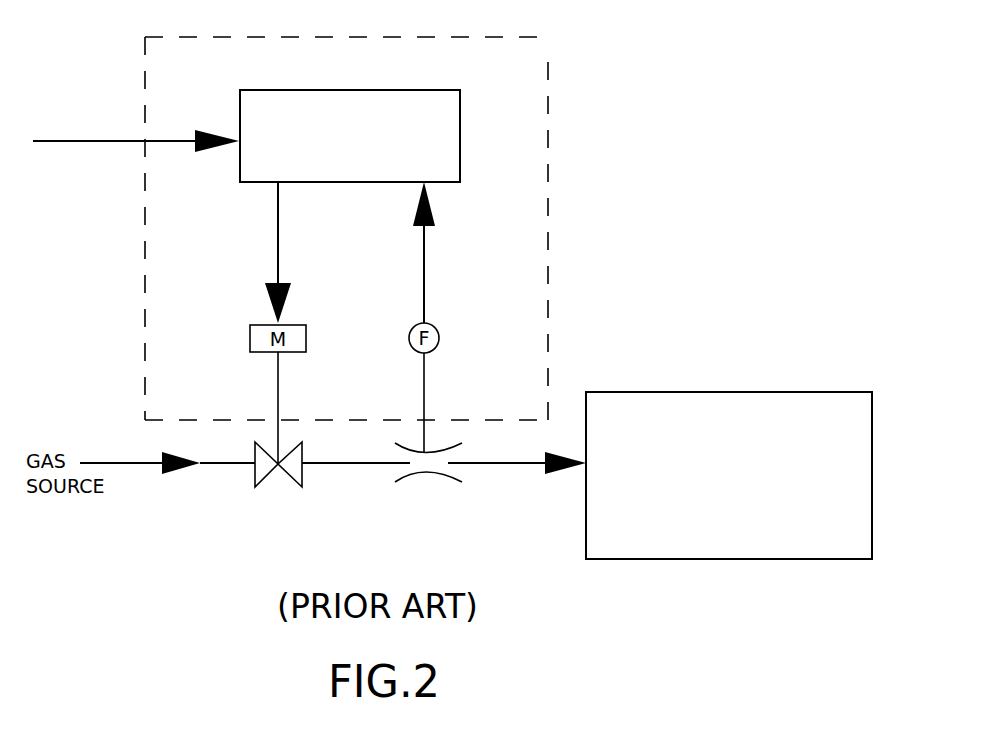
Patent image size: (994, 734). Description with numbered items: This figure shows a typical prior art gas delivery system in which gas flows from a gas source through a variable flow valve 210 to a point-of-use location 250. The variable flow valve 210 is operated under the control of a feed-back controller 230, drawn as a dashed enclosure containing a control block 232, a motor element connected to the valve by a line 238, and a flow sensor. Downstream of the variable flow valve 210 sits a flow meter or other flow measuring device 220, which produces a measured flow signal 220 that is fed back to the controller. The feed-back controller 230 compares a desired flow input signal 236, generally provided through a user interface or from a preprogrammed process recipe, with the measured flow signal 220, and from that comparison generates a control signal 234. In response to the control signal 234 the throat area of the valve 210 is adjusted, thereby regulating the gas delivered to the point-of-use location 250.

The variable flow valve 210 is at (268, 480).
The flow measuring device 220 is at (412, 474).
The feed-back controller 230 is at (548, 62).
The controller 232 is at (381, 148).
The control signal 234 is at (424, 248).
The desired flow input signal 236 is at (92, 141).
The valve control signal 238 is at (278, 248).
The point-of-use location 250 is at (729, 475).